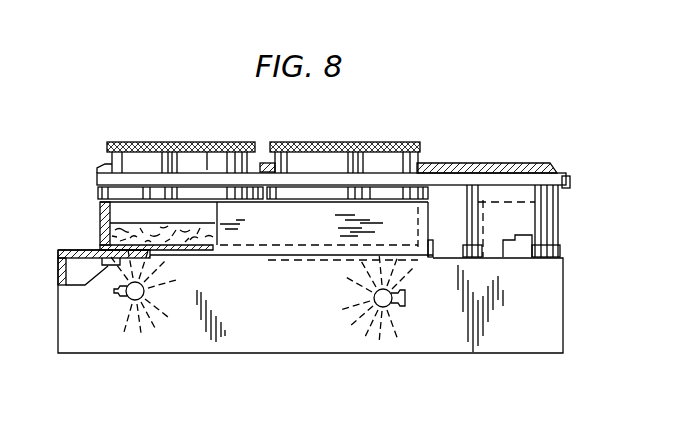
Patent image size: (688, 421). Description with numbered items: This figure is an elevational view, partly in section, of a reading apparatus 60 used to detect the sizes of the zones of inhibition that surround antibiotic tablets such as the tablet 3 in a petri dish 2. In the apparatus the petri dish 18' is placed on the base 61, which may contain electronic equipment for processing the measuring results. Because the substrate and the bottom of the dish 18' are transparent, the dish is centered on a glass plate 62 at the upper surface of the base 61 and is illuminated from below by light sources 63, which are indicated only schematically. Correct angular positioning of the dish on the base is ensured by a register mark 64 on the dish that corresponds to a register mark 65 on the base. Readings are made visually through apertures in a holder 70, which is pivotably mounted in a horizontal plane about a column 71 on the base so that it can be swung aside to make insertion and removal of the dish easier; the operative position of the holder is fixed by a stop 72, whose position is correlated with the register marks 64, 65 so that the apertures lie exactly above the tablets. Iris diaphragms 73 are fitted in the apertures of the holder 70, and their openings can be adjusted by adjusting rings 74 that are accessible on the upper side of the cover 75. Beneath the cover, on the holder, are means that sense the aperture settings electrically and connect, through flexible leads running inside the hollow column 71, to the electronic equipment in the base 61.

The petri dish 2 is at (177, 237).
The tablet 3 is at (215, 219).
The petri dish 18' is at (73, 218).
The reading apparatus 60 is at (585, 271).
The base 61 is at (543, 318).
The glass plate 62 is at (130, 264).
The light sources 63 is at (395, 306).
The register mark 64 is at (264, 233).
The register mark 65 is at (265, 250).
The holder 70 is at (387, 180).
The column 71 is at (517, 205).
The stop 72 is at (510, 238).
The iris diaphragm 73 is at (204, 190).
The adjusting ring 74 is at (141, 143).
The cover 75 is at (497, 165).